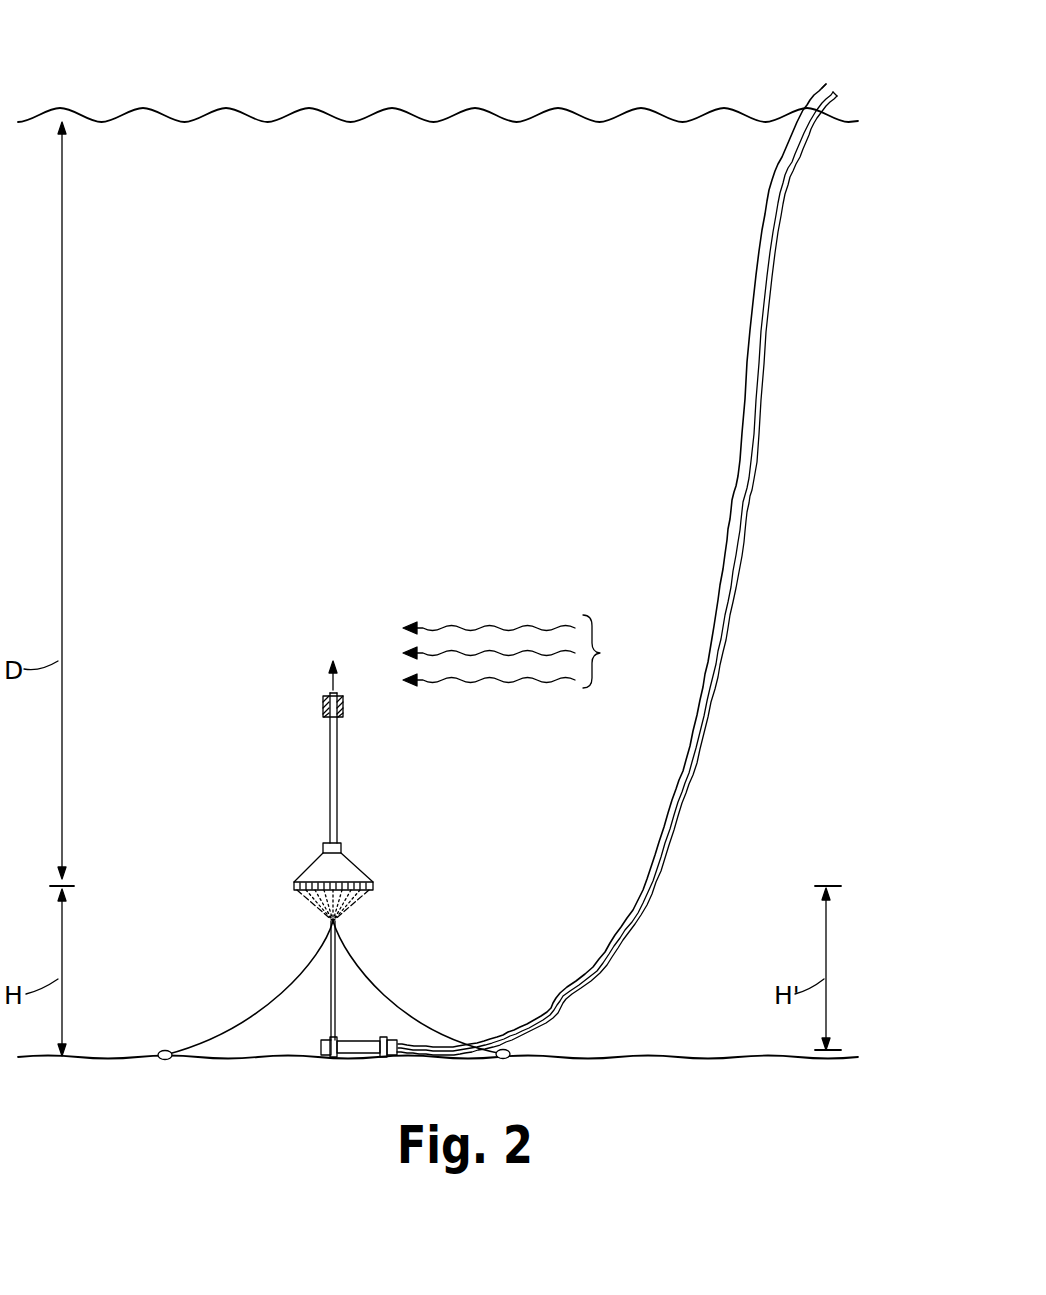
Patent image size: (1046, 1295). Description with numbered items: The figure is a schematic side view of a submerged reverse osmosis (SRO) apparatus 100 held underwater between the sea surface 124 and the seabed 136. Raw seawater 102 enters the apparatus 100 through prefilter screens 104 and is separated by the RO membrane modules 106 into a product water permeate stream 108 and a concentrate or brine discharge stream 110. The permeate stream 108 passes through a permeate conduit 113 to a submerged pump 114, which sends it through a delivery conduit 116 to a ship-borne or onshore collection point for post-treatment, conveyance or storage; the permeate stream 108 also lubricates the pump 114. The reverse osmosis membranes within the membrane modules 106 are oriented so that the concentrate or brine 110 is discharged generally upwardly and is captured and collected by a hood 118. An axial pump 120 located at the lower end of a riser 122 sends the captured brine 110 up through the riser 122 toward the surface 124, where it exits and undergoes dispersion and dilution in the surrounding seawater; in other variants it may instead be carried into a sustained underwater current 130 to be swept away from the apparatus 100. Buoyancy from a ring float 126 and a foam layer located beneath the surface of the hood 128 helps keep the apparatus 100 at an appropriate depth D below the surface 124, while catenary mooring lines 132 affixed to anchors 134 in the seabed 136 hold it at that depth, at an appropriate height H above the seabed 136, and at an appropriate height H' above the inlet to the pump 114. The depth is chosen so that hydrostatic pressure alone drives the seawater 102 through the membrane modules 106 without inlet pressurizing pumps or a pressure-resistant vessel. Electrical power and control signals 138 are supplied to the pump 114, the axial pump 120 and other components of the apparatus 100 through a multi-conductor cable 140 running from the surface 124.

The SRO apparatus 100 is at (437, 819).
The raw seawater 102 is at (304, 923).
The prefilter screens 104 is at (309, 909).
The RO membrane modules 106 is at (375, 889).
The product water permeate stream 108 is at (852, 90).
The concentrate or brine discharge stream 110 is at (325, 670).
The permeate conduit 113 is at (330, 1004).
The submerged pump 114 is at (365, 1047).
The delivery conduit 116 is at (652, 896).
The hood 118 is at (356, 871).
The axial pump 120 is at (342, 846).
The riser 122 is at (339, 766).
The surface 124 is at (396, 106).
The ring float 126 is at (321, 706).
The hood 128 is at (319, 871).
The sustained underwater current 130 is at (526, 651).
The catenary mooring lines 132 is at (217, 1042).
The anchors 134 is at (163, 1050).
The seabed 136 is at (645, 1055).
The electrical power and control signals 138 is at (832, 76).
The multi-conductor cable 140 is at (726, 534).